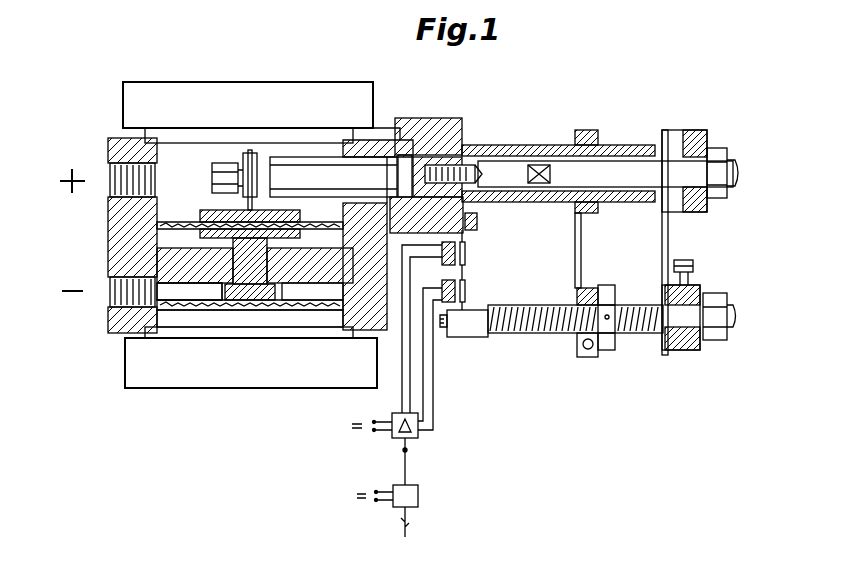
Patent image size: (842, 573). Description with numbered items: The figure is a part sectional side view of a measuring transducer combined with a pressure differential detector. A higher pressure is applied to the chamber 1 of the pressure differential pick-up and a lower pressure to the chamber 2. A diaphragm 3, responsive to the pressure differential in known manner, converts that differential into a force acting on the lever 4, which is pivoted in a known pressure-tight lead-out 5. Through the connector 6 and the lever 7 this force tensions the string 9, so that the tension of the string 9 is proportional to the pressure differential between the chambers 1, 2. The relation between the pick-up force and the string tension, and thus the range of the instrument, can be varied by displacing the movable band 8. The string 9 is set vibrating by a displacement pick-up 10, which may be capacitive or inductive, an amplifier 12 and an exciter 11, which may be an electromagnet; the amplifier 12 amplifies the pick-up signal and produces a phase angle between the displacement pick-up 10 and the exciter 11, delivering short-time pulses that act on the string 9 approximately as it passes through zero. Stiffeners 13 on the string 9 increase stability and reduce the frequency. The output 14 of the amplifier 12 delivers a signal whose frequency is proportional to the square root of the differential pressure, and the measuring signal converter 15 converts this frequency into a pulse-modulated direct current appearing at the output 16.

The chamber 1 is at (174, 152).
The chamber 2 is at (207, 296).
The diaphragm 3 is at (317, 230).
The lever 4 is at (360, 173).
The pressure-tight lead-out 5 is at (420, 147).
The connector 6 is at (668, 233).
The lever 7 is at (643, 334).
The movable band 8 is at (581, 240).
The string 9 is at (467, 273).
The displacement pick-up 10 is at (446, 264).
The exciter 11 is at (458, 313).
The amplifier 12 is at (419, 433).
The stiffeners 13 is at (468, 292).
The output 14 is at (402, 451).
The measuring signal converter 15 is at (419, 494).
The output 16 is at (408, 525).